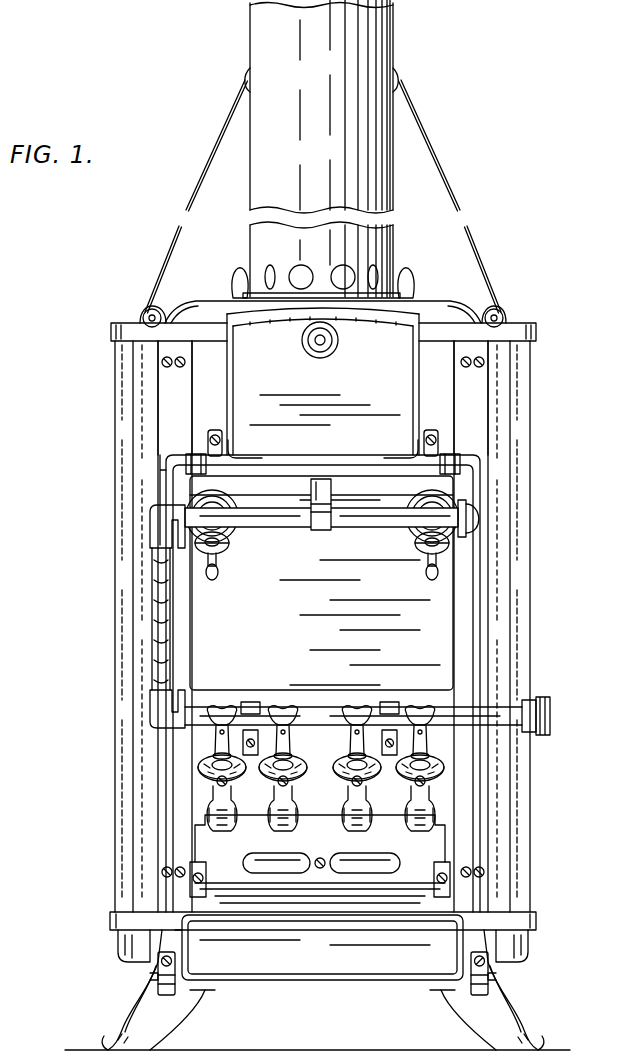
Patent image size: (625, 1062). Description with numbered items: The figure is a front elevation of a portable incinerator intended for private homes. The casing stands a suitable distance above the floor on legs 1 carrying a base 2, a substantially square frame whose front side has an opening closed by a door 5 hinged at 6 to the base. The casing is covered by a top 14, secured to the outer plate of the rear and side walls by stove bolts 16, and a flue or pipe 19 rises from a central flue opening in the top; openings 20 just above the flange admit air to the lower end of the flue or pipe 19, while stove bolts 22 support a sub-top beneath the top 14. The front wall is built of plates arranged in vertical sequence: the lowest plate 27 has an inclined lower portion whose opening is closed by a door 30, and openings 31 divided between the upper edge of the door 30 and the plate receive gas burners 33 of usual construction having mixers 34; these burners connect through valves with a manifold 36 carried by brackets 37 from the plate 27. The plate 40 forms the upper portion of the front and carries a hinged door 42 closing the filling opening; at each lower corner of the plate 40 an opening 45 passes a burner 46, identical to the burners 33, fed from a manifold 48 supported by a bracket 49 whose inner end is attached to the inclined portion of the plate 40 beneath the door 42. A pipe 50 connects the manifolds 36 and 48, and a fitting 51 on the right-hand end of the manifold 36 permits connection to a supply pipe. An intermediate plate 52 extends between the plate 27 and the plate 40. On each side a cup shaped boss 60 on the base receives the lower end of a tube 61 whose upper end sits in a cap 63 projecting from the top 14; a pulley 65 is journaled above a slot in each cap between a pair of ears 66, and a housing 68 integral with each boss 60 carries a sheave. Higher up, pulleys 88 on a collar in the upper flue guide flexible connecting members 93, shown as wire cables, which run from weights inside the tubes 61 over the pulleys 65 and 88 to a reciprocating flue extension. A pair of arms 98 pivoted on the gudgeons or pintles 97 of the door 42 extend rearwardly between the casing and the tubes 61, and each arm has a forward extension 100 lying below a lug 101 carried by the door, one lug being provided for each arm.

The legs 1 is at (142, 1024).
The base 2 is at (140, 978).
The door 5 is at (319, 952).
The hinge 6 is at (468, 992).
The top 14 is at (207, 305).
The stove bolts 16 is at (166, 321).
The flue or pipe 19 is at (383, 189).
The openings 20 is at (349, 272).
The stove bolts 22 is at (238, 283).
The front plate 27 is at (447, 796).
The door 30 is at (320, 859).
The openings 31 is at (350, 809).
The gas burners 33 is at (279, 806).
The mixers 34 is at (233, 768).
The manifold 36 is at (313, 713).
The brackets 37 is at (391, 708).
The plate 40 is at (323, 398).
The door 42 is at (323, 384).
The opening 45 is at (425, 502).
The burner 46 is at (415, 558).
The manifold 48 is at (274, 518).
The bracket 49 is at (311, 492).
The pipe 50 is at (160, 588).
The fitting 51 is at (551, 716).
The intermediate plate 52 is at (321, 583).
The cup shaped boss 60 is at (110, 923).
The tube 61 is at (126, 742).
The cap 63 is at (111, 333).
The pulley 65 is at (150, 308).
The ears 66 is at (144, 320).
The housing 68 is at (135, 950).
The pulleys 88 is at (245, 80).
The flexible connecting members 93 is at (193, 198).
The gudgeons or pintles 97 is at (192, 462).
The arms 98 is at (483, 466).
The extension 100 is at (214, 461).
The lug 101 is at (231, 452).